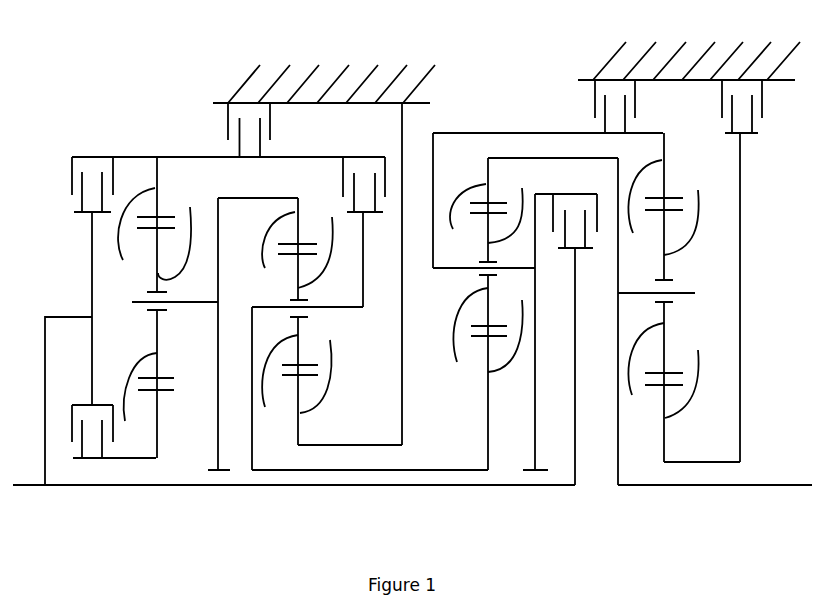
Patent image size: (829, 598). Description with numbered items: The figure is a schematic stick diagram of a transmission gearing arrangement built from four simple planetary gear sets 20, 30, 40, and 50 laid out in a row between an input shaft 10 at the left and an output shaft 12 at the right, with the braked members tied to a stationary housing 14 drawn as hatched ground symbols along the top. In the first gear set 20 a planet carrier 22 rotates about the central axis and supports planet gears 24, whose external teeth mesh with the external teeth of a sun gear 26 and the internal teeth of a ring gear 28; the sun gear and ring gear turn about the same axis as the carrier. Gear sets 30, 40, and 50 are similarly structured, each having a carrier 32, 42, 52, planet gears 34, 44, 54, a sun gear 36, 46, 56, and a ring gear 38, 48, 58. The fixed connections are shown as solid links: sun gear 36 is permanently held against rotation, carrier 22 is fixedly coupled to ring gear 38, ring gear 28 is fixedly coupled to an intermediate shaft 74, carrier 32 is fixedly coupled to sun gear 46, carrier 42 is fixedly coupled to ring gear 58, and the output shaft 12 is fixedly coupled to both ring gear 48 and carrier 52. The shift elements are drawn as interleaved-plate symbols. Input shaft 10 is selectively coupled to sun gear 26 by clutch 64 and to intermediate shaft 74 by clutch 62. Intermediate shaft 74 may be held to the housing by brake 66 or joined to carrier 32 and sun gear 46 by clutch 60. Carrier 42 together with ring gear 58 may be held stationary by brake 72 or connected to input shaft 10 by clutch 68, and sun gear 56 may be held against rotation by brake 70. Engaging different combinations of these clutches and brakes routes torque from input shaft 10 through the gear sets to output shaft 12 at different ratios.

The input shaft 10 is at (22, 487).
The output shaft 12 is at (783, 487).
The stationary housing 14 is at (244, 90).
The planetary gear set 20 is at (158, 514).
The planet carrier 22 is at (221, 296).
The planet gears 24 is at (159, 317).
The sun gear 26 is at (157, 440).
The ring gear 28 is at (145, 224).
The planetary gear set 30 is at (299, 514).
The carrier 32 is at (365, 270).
The planet gears 34 is at (302, 315).
The sun gear 36 is at (342, 274).
The ring gear 38 is at (289, 249).
The planetary gear set 40 is at (548, 327).
The carrier 42 is at (537, 288).
The planet gears 44 is at (491, 276).
The sun gear 46 is at (503, 372).
The ring gear 48 is at (477, 210).
The planetary gear set 50 is at (668, 514).
The carrier 52 is at (618, 421).
The planet gears 54 is at (665, 295).
The sun gear 56 is at (677, 382).
The ring gear 58 is at (653, 206).
The clutch 60 is at (378, 156).
The clutch 62 is at (72, 168).
The clutch 64 is at (72, 405).
The brake 66 is at (228, 120).
The clutch 68 is at (555, 193).
The brake 70 is at (763, 93).
The brake 72 is at (593, 100).
The intermediate shaft 74 is at (313, 158).